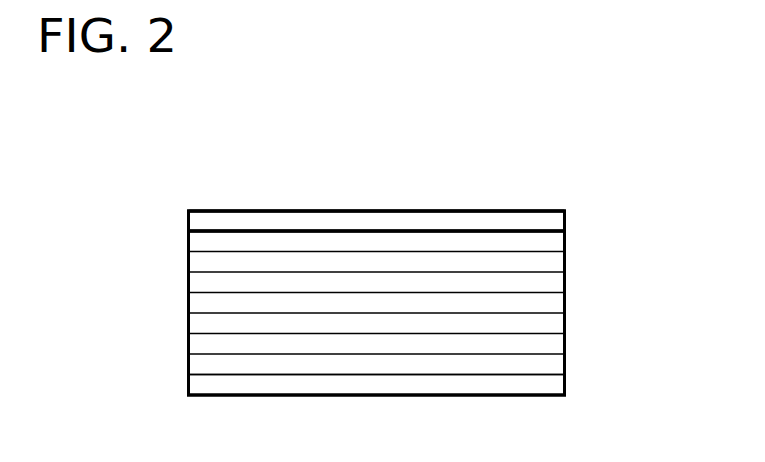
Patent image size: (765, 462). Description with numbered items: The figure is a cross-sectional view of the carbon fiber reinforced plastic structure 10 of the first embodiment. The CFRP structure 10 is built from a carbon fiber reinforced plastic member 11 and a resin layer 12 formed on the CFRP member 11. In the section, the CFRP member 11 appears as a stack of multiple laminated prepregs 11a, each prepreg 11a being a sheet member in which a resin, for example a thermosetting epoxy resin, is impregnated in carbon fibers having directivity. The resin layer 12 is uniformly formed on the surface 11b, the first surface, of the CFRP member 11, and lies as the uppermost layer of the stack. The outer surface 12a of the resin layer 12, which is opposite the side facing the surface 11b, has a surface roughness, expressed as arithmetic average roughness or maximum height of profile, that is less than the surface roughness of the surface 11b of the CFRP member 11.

The carbon fiber reinforced plastic structure 10 is at (502, 167).
The carbon fiber reinforced plastic member 11 is at (585, 298).
The prepreg 11a is at (567, 341).
The surface 11b is at (238, 229).
The resin layer 12 is at (553, 222).
The surface 12a is at (342, 208).